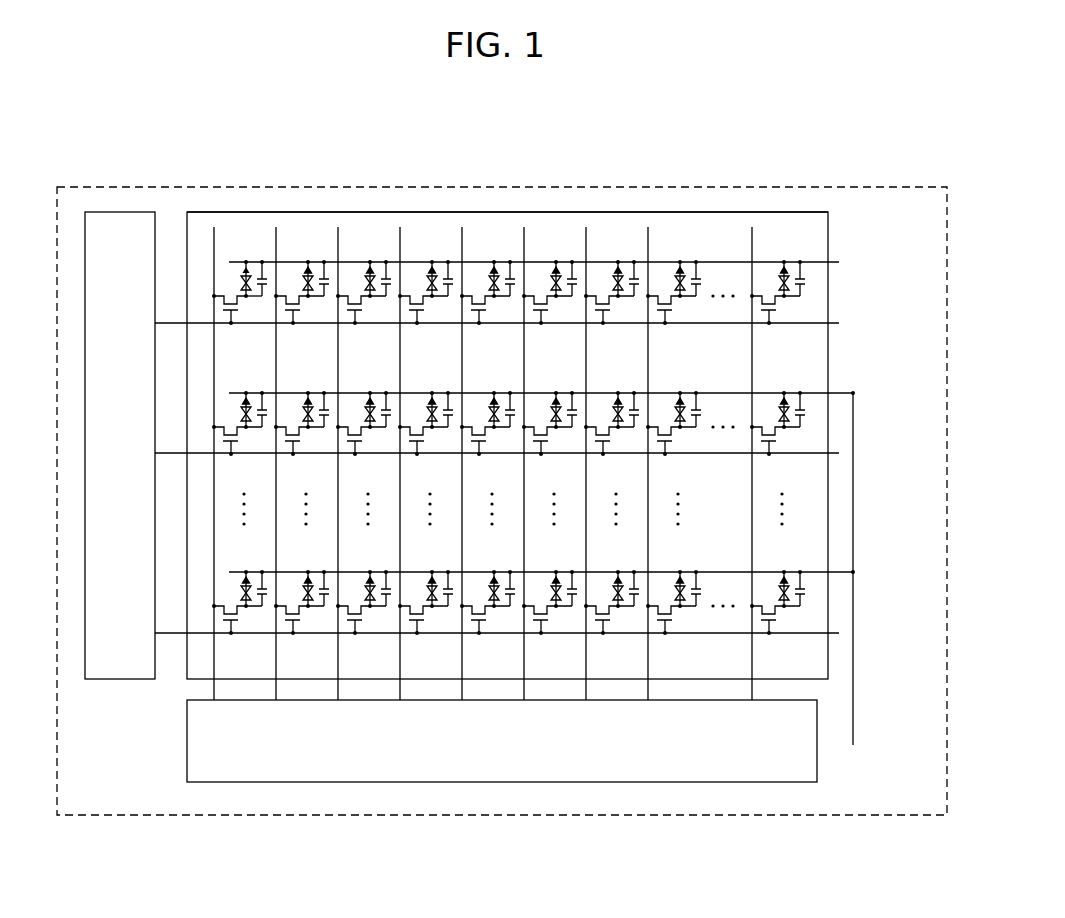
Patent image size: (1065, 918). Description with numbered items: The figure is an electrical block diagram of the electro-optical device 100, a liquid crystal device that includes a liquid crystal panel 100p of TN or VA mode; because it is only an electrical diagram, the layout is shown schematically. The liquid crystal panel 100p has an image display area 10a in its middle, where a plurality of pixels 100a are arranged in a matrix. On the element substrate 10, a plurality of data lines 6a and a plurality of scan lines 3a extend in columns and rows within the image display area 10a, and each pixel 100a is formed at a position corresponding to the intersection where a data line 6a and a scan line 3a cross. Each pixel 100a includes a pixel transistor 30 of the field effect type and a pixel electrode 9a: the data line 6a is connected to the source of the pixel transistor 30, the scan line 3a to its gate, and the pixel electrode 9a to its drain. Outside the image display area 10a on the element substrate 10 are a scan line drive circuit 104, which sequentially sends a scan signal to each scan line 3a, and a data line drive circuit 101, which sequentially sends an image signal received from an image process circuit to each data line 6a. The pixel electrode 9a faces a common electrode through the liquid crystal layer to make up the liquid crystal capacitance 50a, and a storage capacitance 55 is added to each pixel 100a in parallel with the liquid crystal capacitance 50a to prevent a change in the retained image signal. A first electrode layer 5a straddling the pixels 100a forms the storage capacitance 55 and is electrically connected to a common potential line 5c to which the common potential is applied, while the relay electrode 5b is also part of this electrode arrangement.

The electro-optical device 100 is at (259, 172).
The scan line drive circuit 104 is at (108, 212).
The data line drive circuit 101 is at (747, 782).
The element substrate 10 is at (507, 386).
The liquid crystal panel 100p is at (487, 187).
The image display area 10a is at (600, 212).
The pixel 100a is at (289, 264).
The data line 6a is at (346, 243).
The scan line 3a is at (733, 322).
The relay electrode 5b is at (706, 262).
The first electrode layer 5a is at (835, 572).
The common potential line 5c is at (855, 690).
The pixel transistor 30 is at (246, 300).
The liquid crystal capacitance 50a is at (243, 290).
The storage capacitance 55 is at (265, 283).
The pixel electrode 9a is at (255, 297).